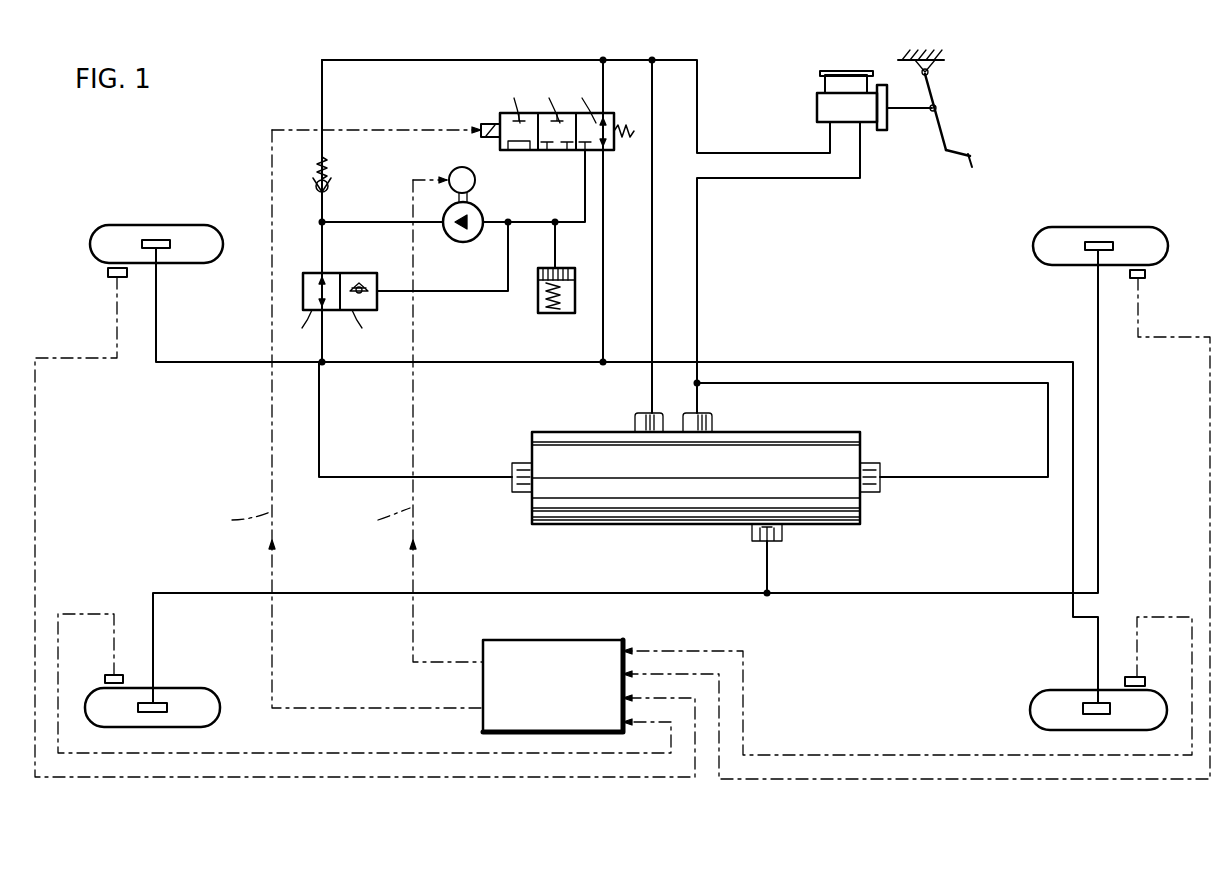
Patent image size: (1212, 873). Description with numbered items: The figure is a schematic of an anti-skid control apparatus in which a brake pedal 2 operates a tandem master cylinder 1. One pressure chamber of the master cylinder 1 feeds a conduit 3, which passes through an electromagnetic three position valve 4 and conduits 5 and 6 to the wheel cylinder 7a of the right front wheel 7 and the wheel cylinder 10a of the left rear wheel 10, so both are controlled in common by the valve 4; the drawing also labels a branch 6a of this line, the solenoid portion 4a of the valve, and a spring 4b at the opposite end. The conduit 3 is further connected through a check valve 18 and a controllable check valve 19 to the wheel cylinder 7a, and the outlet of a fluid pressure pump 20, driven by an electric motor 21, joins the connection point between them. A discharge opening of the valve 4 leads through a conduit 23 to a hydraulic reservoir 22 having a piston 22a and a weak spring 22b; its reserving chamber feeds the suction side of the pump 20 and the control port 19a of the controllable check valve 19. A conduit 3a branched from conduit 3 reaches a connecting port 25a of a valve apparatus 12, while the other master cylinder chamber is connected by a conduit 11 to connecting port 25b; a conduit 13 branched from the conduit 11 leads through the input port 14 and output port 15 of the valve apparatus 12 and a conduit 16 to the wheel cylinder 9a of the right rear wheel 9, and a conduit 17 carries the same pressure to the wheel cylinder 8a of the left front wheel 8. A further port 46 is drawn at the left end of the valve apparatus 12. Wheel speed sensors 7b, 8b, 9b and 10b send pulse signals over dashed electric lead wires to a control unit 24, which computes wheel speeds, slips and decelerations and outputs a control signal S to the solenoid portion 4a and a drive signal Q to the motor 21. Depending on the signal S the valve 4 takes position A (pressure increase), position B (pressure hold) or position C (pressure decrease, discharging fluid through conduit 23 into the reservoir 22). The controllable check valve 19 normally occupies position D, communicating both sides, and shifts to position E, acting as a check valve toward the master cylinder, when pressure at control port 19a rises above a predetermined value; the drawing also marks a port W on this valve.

The tandem master cylinder 1 is at (808, 80).
The brake pedal 2 is at (956, 138).
The conduit 3 is at (612, 62).
The conduit 3a is at (654, 225).
The electromagnetic three position valve 4 is at (530, 151).
The solenoid portion 4a is at (485, 124).
The return spring 4b is at (620, 140).
The conduit 5 is at (606, 222).
The conduit 6 is at (498, 364).
The branch line 6a is at (322, 402).
The right front wheel 7 is at (114, 232).
The wheel cylinder 7a is at (155, 240).
The wheel speed sensor 7b is at (108, 274).
The left front wheel 8 is at (195, 697).
The wheel cylinder 8a is at (160, 703).
The wheel speed sensor 8b is at (106, 676).
The right rear wheel 9 is at (1056, 234).
The wheel cylinder 9a is at (1100, 242).
The wheel speed sensor 9b is at (1145, 278).
The left rear wheel 10 is at (1050, 692).
The wheel cylinder 10a is at (1090, 703).
The wheel speed sensor 10b is at (1143, 678).
The conduit 11 is at (700, 225).
The valve apparatus 12 is at (796, 432).
The conduit 13 is at (930, 386).
The input port 14 is at (884, 478).
The output port 15 is at (769, 546).
The conduit 16 is at (908, 592).
The conduit 17 is at (536, 592).
The check valve 18 is at (330, 186).
The controllable check valve 19 is at (310, 273).
The control port 19a is at (378, 290).
The fluid pressure pump 20 is at (458, 242).
The electric motor 21 is at (450, 170).
The hydraulic reservoir 22 is at (558, 318).
The piston 22a is at (538, 280).
The spring 22b is at (545, 308).
The conduit 23 is at (585, 190).
The control unit 24 is at (545, 640).
The connecting port 25a is at (640, 414).
The connecting port 25b is at (708, 414).
The port 46 is at (510, 470).
The first position A is at (581, 96).
The second position B is at (545, 96).
The third position C is at (508, 96).
The position D is at (297, 328).
The position E is at (366, 328).
The valve port W is at (296, 291).
The control signal S is at (346, 417).
The drive signal Q is at (419, 421).